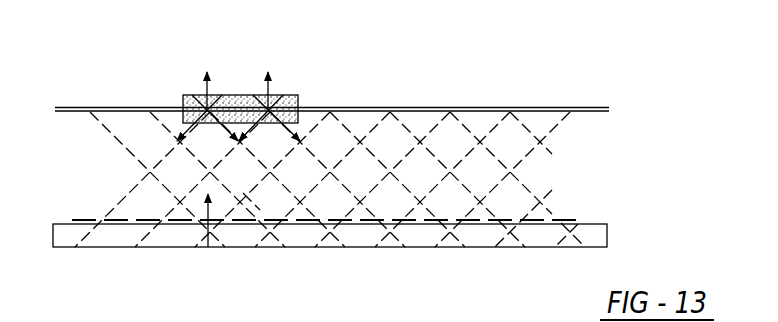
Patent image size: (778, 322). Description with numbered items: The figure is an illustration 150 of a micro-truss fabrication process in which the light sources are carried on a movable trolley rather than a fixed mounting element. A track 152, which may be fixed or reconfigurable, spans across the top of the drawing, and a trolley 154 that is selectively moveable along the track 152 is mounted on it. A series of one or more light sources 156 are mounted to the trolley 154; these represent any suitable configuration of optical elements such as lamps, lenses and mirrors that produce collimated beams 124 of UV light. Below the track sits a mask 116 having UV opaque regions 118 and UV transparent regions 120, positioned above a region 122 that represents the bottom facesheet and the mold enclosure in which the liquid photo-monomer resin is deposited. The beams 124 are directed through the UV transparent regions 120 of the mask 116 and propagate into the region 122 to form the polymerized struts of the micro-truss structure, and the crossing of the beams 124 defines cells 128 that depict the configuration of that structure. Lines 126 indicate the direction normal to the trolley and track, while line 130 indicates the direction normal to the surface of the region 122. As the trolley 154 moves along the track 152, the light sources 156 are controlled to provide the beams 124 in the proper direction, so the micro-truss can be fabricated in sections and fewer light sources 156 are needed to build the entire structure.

The mask 116 is at (338, 227).
The UV opaque regions 118 is at (298, 195).
The UV transparent regions 120 is at (162, 219).
The region 122 is at (413, 249).
The collimated beams 124 is at (243, 193).
The lines 126 is at (209, 92).
The cells 128 is at (370, 161).
The line 130 is at (202, 212).
The illustration 150 is at (369, 75).
The track 152 is at (112, 107).
The trolley 154 is at (240, 94).
The light sources 156 is at (194, 94).